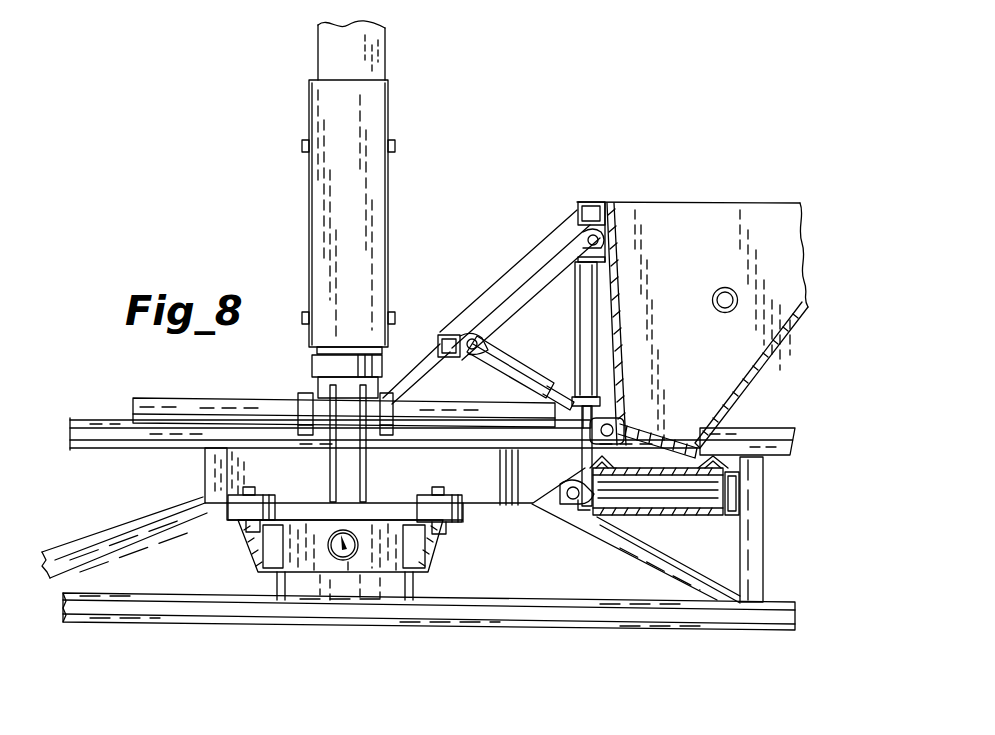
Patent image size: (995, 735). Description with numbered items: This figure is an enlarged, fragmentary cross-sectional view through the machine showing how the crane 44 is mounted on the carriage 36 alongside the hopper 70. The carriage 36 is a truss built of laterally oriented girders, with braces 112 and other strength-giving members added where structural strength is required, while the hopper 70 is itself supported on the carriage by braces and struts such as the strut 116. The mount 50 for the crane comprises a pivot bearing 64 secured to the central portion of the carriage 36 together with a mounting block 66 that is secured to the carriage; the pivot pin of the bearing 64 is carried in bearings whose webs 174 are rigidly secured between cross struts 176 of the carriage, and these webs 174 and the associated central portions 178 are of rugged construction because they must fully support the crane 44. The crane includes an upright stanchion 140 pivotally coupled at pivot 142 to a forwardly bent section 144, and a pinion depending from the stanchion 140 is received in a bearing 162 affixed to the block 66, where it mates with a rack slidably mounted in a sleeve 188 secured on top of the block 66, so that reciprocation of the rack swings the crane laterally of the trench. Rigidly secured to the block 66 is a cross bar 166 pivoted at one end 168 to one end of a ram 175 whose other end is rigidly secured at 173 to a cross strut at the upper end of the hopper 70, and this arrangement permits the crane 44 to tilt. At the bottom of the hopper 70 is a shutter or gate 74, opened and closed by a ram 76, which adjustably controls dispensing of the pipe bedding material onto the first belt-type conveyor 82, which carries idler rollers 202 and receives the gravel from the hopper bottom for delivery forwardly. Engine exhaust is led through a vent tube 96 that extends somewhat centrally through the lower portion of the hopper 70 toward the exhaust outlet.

The carriage 36 is at (90, 410).
The crane 44 is at (390, 210).
The mount 50 is at (285, 386).
The pivot bearing 64 is at (350, 560).
The mounting block 66 is at (278, 571).
The hopper 70 is at (760, 377).
The gate 74 is at (647, 443).
The ram 76 is at (514, 365).
The first belt-type conveyor 82 is at (680, 518).
The vent tube 96 is at (734, 292).
The brace 112 is at (598, 540).
The strut 116 is at (487, 302).
The upright stanchion 140 is at (327, 232).
The pivot 142 is at (392, 148).
The forwardly bent section 144 is at (323, 48).
The bearing 162 is at (376, 363).
The cross bar 166 is at (470, 488).
The pivot end 168 is at (573, 502).
The securement point 173 is at (588, 235).
The web 174 is at (300, 560).
The ram 175 is at (582, 322).
The cross strut 176 is at (258, 537).
The central portion 178 is at (355, 525).
The sleeve 188 is at (207, 405).
The idler roller 202 is at (739, 488).